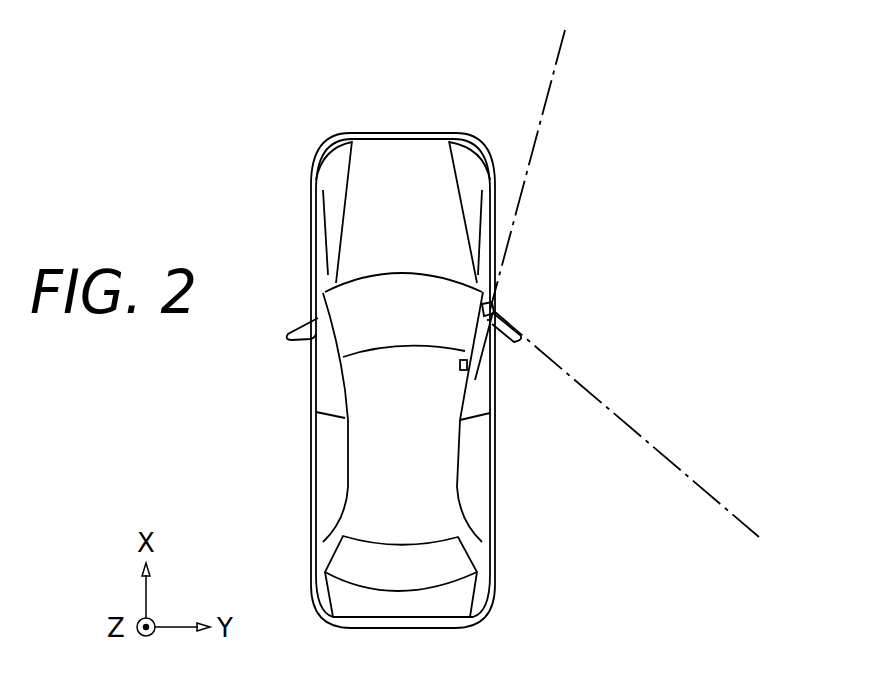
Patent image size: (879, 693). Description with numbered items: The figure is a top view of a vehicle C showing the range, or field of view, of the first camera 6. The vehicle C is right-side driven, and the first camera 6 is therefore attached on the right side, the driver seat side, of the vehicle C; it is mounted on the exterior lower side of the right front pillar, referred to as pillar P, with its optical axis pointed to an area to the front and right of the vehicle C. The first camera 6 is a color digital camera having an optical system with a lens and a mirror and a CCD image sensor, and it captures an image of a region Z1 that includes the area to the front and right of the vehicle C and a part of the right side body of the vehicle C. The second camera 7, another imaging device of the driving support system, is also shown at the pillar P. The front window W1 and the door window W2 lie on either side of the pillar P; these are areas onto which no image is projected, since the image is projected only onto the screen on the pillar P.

The vehicle C is at (380, 132).
The front window W1 is at (397, 290).
The door window W2 is at (483, 390).
The pillar P is at (470, 333).
The first camera 6 is at (494, 306).
The second camera 7 is at (460, 368).
The region Z1 is at (577, 300).